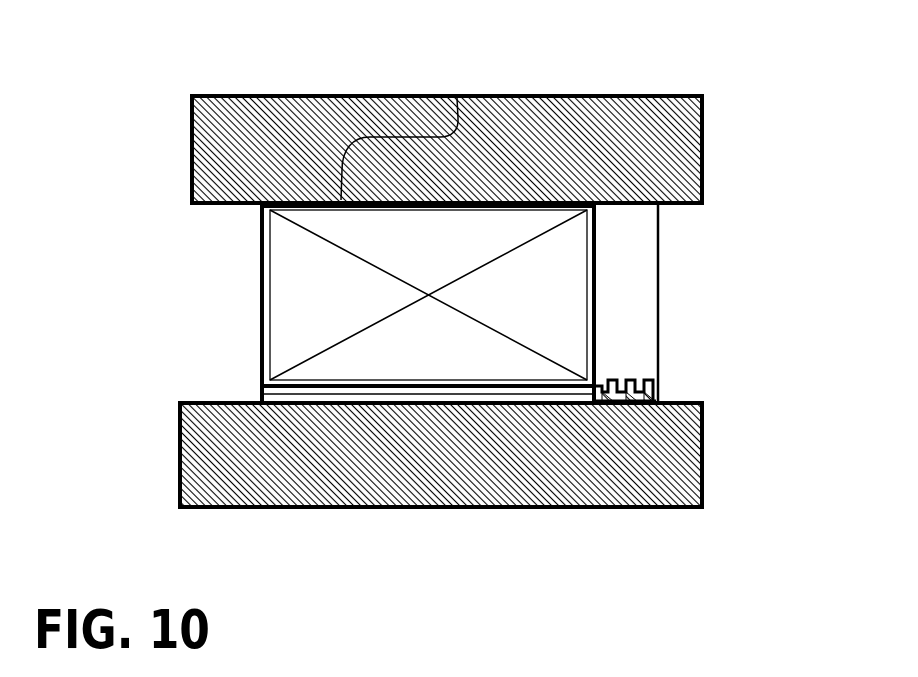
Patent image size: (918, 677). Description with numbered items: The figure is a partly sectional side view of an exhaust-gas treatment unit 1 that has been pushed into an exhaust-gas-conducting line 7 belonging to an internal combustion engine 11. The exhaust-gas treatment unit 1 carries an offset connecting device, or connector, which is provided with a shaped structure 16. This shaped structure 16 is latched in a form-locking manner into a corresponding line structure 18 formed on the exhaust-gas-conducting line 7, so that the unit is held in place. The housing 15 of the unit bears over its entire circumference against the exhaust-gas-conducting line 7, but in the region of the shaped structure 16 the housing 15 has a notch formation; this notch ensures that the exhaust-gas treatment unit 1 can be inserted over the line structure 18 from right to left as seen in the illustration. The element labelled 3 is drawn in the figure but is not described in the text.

The exhaust-gas treatment unit 1 is at (678, 284).
The coil 3 is at (457, 379).
The exhaust-gas-conducting line 7 is at (218, 375).
The internal combustion engine 11 is at (265, 80).
The housing 15 is at (457, 98).
The shaped structure 16 is at (636, 367).
The line structure 18 is at (631, 422).